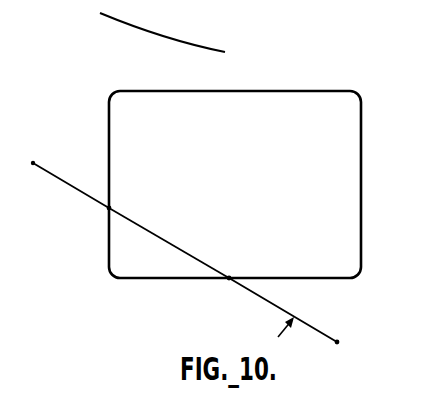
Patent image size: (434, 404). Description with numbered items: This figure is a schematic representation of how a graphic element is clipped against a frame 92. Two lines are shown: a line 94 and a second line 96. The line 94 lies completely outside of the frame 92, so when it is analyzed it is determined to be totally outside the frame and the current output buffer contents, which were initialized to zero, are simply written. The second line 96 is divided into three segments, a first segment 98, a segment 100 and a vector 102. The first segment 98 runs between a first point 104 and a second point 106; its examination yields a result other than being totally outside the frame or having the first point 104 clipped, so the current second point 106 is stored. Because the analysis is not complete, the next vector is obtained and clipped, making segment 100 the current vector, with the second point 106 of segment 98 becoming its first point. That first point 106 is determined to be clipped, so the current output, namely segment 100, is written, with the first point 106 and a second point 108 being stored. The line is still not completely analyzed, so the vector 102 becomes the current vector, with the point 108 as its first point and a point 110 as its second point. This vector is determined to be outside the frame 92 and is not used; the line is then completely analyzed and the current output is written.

The frame 92 is at (361, 128).
The line 94 is at (193, 47).
The second line 96 is at (273, 334).
The first segment 98 is at (82, 192).
The segment 100 is at (168, 243).
The vector 102 is at (260, 298).
The first point 104 is at (35, 160).
The second point 106 is at (111, 208).
The second point 108 is at (230, 277).
The second point 110 is at (340, 341).